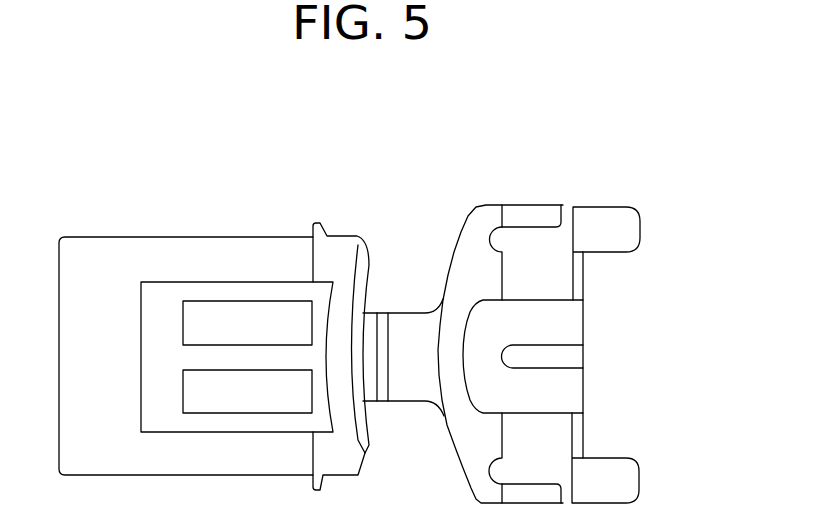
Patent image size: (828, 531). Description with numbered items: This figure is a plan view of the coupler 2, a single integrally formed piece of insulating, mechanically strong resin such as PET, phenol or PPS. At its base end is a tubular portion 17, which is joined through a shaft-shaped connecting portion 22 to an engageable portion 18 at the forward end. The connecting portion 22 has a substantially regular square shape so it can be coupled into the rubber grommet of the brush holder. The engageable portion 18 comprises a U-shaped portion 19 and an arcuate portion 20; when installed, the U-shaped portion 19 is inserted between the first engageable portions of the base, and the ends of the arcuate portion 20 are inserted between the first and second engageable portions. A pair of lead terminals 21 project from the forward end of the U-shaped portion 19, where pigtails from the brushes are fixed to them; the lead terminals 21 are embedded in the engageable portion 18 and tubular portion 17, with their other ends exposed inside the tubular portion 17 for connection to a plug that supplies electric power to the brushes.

The coupler 2 is at (378, 164).
The tubular portion 17 is at (212, 234).
The engageable portion 18 is at (498, 203).
The U-shaped portion 19 is at (573, 329).
The arcuate portion 20 is at (472, 452).
The lead terminals 21 is at (631, 234).
The connecting portion 22 is at (415, 311).